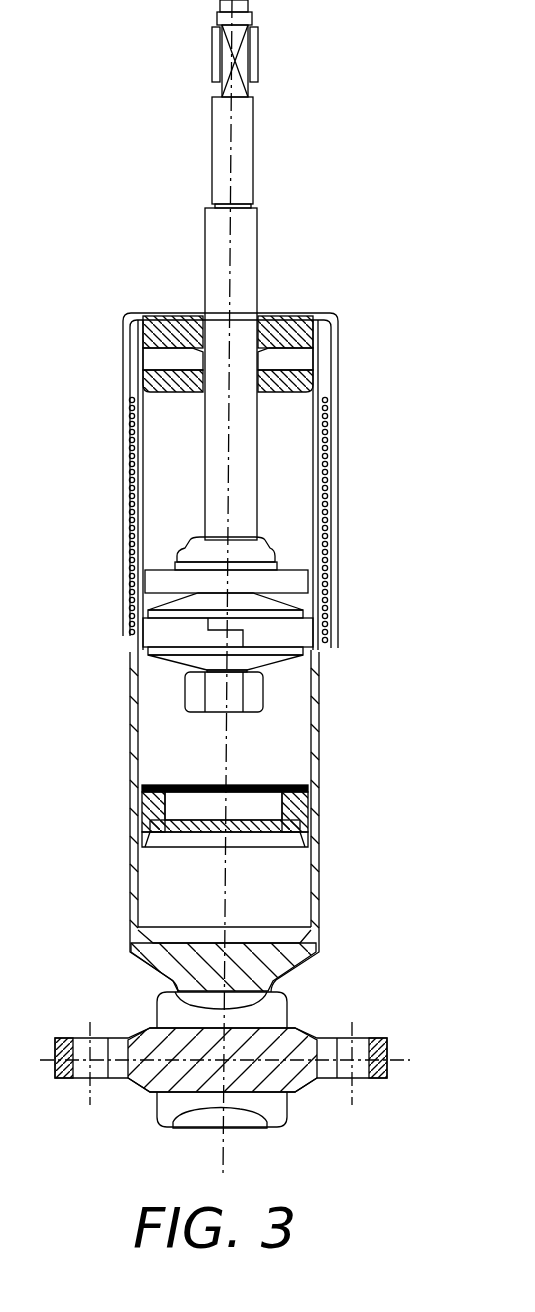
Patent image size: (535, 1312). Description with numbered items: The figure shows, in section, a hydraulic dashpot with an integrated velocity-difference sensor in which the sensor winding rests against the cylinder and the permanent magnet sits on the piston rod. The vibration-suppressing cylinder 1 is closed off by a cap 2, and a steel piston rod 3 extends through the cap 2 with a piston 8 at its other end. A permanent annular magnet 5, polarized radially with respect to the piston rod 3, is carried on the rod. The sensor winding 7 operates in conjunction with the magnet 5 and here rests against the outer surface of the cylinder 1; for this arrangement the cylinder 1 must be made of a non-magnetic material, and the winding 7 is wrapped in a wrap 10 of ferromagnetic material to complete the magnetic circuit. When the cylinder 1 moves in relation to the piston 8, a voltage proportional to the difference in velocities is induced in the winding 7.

The vibration-suppressing cylinder 1 is at (318, 889).
The cap 2 is at (160, 332).
The piston rod 3 is at (232, 233).
The permanent annular magnet 5 is at (310, 580).
The sensor winding 7 is at (320, 630).
The piston 8 is at (150, 628).
The wrap of ferromagnetic material 10 is at (337, 350).